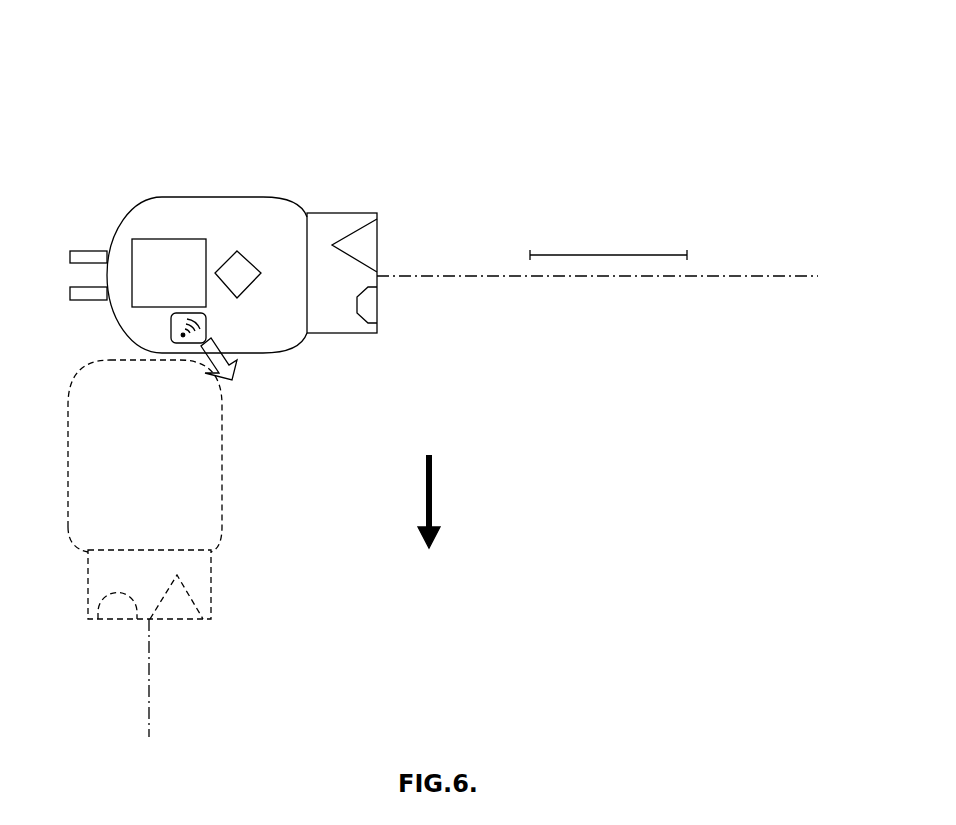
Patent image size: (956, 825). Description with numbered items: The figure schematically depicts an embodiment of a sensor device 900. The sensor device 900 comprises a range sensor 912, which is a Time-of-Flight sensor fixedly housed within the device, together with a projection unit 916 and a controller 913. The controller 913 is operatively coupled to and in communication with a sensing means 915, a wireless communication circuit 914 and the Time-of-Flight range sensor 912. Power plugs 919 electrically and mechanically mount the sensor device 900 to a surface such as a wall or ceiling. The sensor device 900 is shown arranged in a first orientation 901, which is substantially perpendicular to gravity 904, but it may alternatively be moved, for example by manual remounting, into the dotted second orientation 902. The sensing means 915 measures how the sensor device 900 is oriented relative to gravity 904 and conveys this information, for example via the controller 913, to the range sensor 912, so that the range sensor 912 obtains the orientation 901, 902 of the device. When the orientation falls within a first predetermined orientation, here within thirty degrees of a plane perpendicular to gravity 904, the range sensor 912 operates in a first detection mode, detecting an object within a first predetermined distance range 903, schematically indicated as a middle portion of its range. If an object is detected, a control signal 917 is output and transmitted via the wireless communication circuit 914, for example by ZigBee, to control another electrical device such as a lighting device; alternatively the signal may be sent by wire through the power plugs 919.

The sensor device 900 is at (90, 74).
The first orientation 901 is at (777, 276).
The second orientation 902 is at (149, 653).
The first predetermined distance range 903 is at (588, 255).
The gravity 904 is at (435, 545).
The range sensor 912 is at (375, 247).
The controller 913 is at (155, 247).
The wireless communication circuit 914 is at (171, 343).
The sensing means 915 is at (240, 287).
The projection unit 916 is at (375, 303).
The control signal 917 is at (206, 370).
The power plugs 919 is at (73, 300).